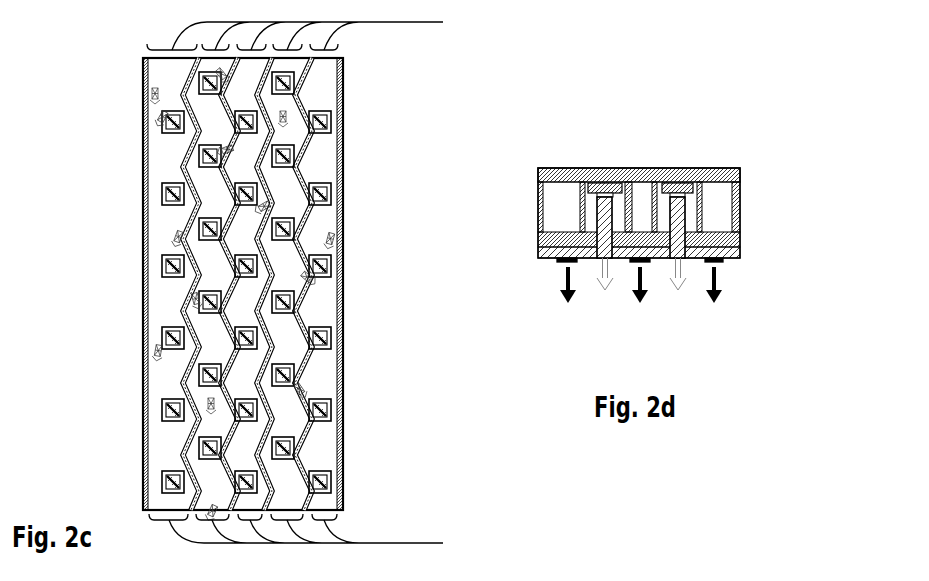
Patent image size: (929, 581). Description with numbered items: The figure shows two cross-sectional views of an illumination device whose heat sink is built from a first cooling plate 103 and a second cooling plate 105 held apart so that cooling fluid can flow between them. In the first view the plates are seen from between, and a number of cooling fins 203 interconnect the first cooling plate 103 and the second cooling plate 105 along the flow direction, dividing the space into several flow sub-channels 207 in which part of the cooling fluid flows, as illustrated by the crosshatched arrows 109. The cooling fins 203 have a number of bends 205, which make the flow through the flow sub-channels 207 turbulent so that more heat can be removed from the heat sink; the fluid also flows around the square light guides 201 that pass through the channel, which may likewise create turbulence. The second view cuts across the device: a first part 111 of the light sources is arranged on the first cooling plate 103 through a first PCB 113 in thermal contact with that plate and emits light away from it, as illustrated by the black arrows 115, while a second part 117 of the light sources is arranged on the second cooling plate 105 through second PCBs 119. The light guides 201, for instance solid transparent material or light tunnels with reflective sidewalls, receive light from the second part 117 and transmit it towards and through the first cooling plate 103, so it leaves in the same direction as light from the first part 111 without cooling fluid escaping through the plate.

In FIG. 2d, the first cooling plate 103 is at (740, 233).
In FIG. 2c, the second cooling plate 105 is at (157, 70).
In FIG. 2d, the second cooling plate 105 is at (550, 172).
In FIG. 2c, the crosshatched arrows 109 is at (213, 400).
In FIG. 2d, the first part of the light sources 111 is at (703, 261).
In FIG. 2d, the first PCB 113 is at (731, 258).
In FIG. 2d, the black arrows 115 is at (713, 300).
In FIG. 2d, the second part of the light sources 117 is at (608, 195).
In FIG. 2d, the second PCBs 119 is at (612, 195).
In FIG. 2c, the light guides 201 is at (327, 192).
In FIG. 2d, the light guides 201 is at (612, 195).
In FIG. 2c, the cooling fins 203 is at (265, 336).
In FIG. 2d, the cooling fins 203 is at (580, 214).
In FIG. 2c, the bends 205 is at (180, 385).
In FIG. 2c, the flow sub-channels 207 is at (320, 287).